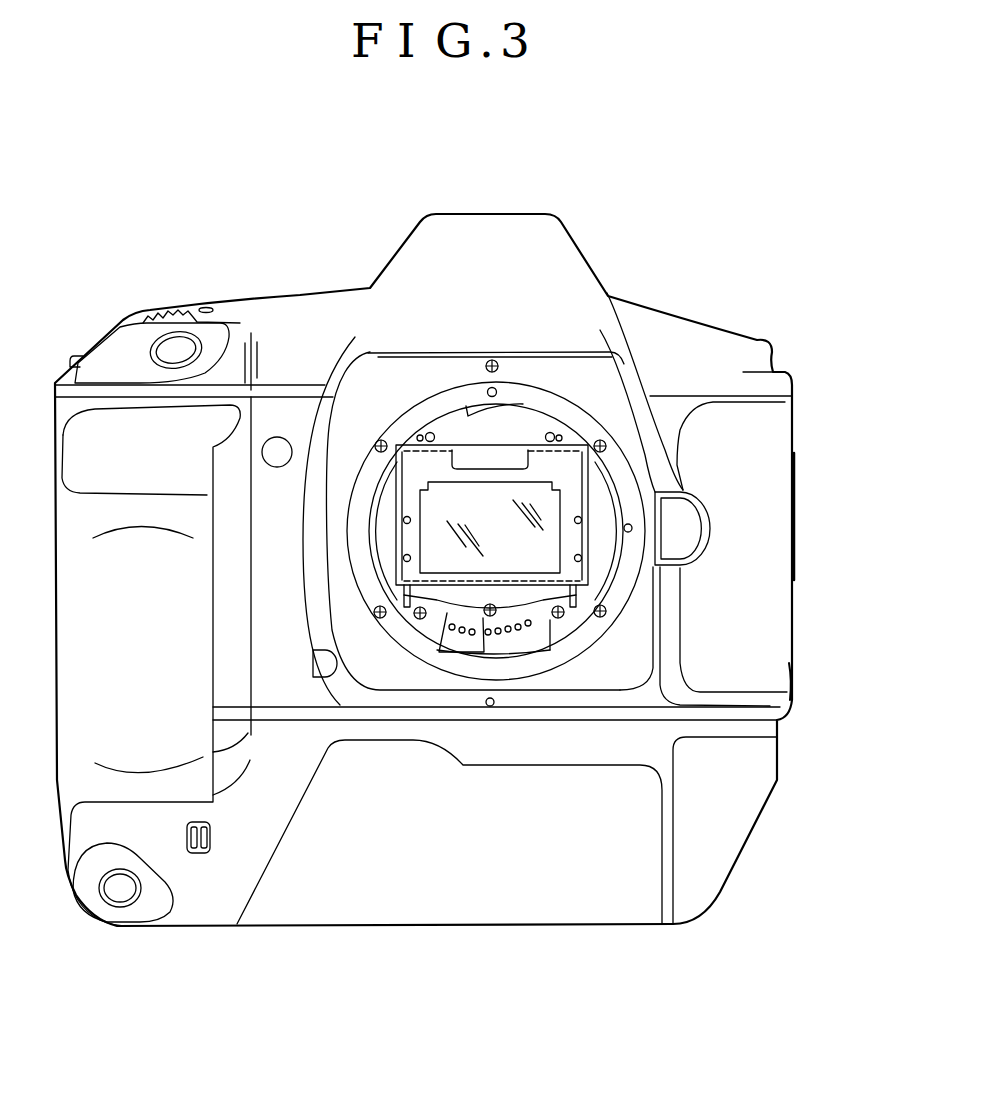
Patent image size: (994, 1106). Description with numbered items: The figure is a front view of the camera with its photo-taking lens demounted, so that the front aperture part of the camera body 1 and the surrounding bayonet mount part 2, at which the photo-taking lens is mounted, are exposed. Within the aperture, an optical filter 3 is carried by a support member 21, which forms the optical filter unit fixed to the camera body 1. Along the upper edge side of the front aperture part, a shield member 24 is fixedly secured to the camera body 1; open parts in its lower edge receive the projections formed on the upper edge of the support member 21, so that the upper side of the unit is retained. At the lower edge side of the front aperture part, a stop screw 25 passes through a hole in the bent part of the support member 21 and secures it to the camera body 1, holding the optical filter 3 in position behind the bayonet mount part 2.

The camera body 1 is at (533, 287).
The bayonet mount part 2 is at (423, 403).
The optical filter 3 is at (537, 540).
The support member 21 is at (570, 497).
The shield member 24 is at (515, 433).
The stop screw 25 is at (500, 612).